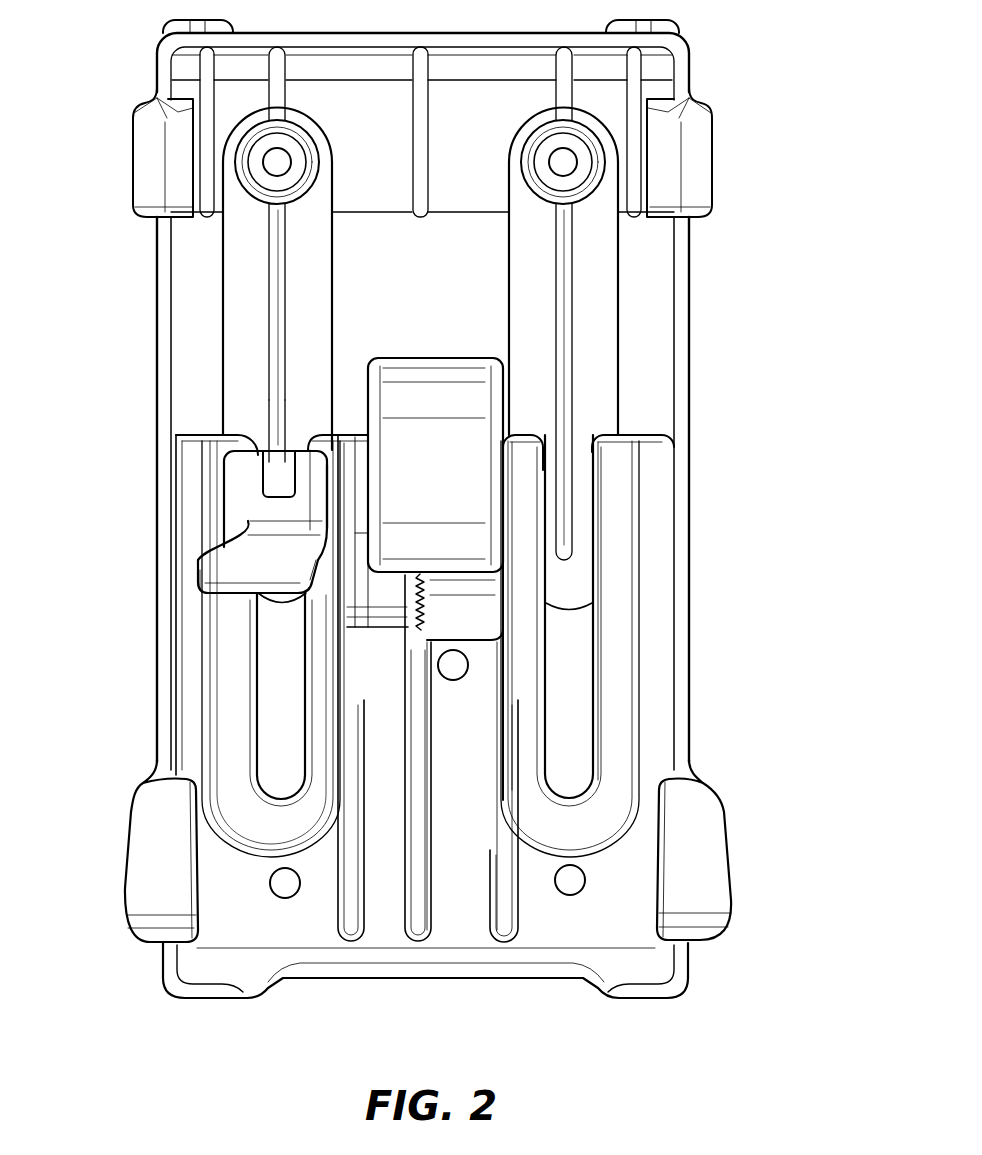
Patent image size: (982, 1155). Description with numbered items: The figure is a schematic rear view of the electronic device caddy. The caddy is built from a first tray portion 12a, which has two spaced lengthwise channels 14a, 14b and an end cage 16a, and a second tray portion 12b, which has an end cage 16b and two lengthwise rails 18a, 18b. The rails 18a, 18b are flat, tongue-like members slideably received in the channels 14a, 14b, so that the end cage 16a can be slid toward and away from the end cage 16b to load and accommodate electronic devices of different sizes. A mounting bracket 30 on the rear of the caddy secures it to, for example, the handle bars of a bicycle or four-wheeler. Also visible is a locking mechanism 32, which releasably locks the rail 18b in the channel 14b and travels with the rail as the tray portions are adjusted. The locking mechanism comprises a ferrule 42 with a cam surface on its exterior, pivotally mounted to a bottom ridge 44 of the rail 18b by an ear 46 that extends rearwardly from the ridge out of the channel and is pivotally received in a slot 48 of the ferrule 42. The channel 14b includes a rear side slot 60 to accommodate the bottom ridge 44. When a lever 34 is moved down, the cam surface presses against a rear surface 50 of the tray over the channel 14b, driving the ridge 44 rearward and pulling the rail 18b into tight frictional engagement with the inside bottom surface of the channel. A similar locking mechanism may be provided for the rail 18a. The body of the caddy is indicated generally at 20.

The first tray portion 12a is at (660, 642).
The second tray portion 12b is at (642, 307).
The channel 14a is at (655, 433).
The channel 14b is at (195, 432).
The end cage 16a is at (217, 865).
The end cage 16b is at (660, 147).
The rail 18a is at (590, 253).
The rail 18b is at (262, 248).
The frame 20 is at (687, 368).
The mounting bracket 30 is at (454, 488).
The locking mechanism 32 is at (267, 451).
The lever 34 is at (258, 565).
The ferrule 42 is at (327, 497).
The bottom ridge 44 is at (278, 290).
The ear 46 is at (272, 443).
The slot 48 is at (280, 460).
The rear surface 50 is at (185, 458).
The rear side slot 60 is at (283, 780).